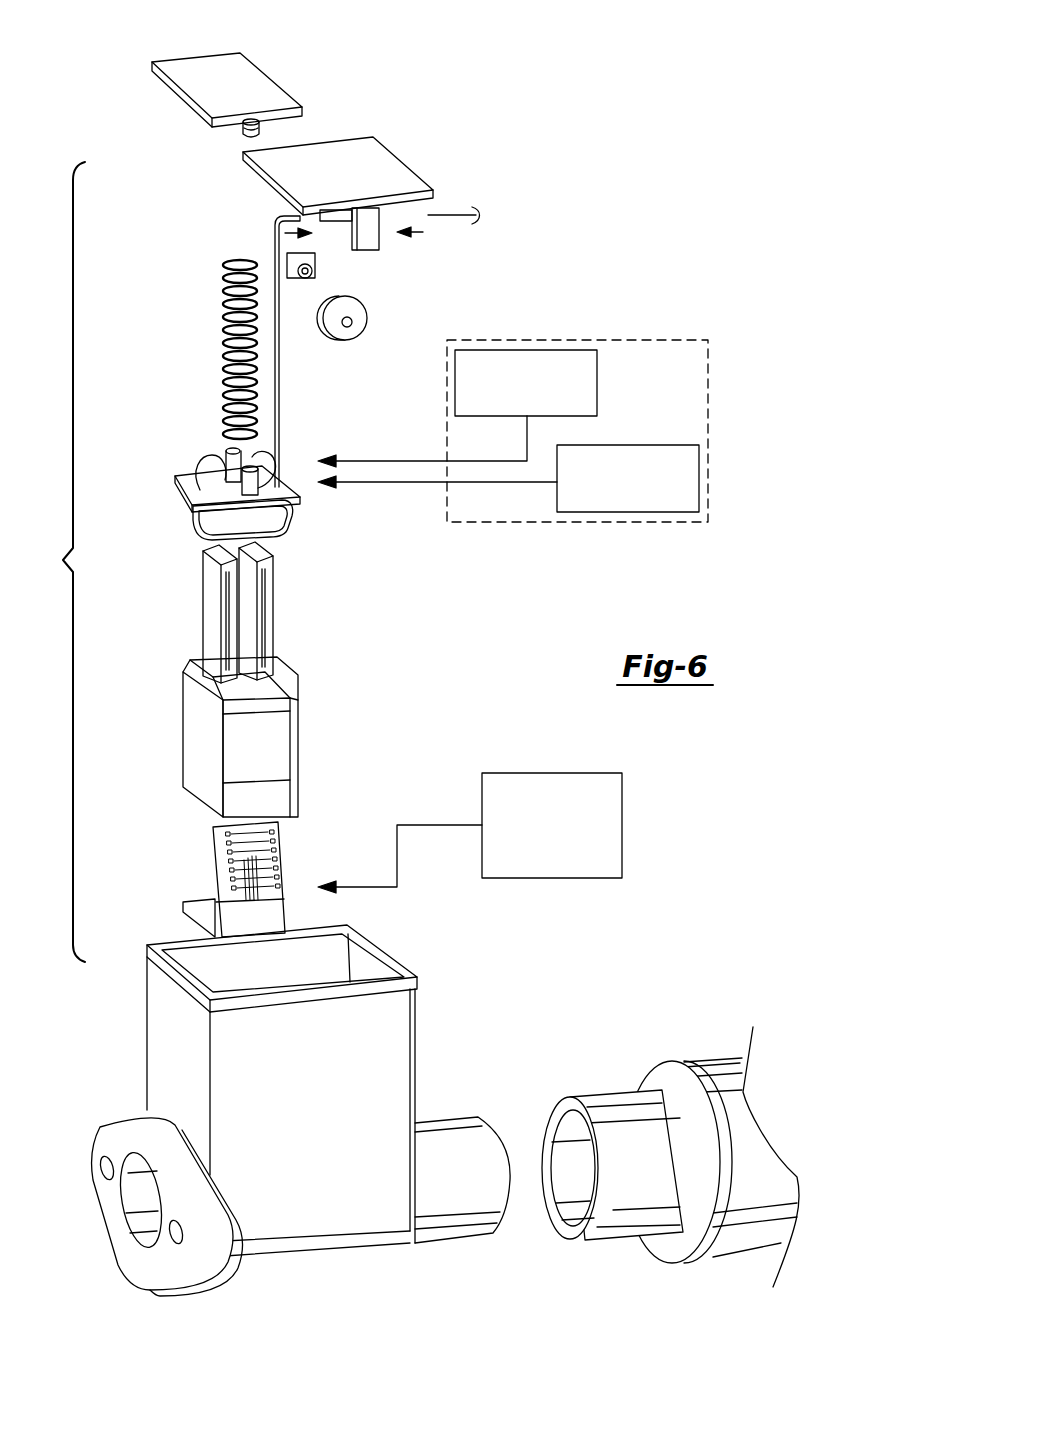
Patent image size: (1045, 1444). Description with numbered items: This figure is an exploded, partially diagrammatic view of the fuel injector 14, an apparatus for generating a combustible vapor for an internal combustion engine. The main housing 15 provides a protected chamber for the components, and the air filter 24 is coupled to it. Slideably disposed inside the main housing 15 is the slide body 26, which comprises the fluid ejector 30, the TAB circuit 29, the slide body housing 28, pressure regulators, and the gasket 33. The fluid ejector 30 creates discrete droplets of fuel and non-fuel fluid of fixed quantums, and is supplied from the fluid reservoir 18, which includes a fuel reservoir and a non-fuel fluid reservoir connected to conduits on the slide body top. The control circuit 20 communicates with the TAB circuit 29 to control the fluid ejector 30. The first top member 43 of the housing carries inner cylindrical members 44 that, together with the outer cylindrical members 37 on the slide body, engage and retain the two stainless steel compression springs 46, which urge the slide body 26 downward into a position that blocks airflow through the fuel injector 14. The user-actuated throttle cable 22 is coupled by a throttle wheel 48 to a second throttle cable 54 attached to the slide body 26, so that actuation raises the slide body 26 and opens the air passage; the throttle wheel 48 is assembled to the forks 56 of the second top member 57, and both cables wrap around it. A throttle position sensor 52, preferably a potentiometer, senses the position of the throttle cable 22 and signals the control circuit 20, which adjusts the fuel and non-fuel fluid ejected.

The fuel injector 14 is at (395, 666).
The main housing 15 is at (172, 1060).
The fluid reservoir 18 is at (708, 350).
The control circuit 20 is at (551, 773).
The throttle cable 22 is at (475, 208).
The air filter 24 is at (706, 1062).
The slide body 26 is at (59, 562).
The slide body housing 28 is at (207, 755).
The TAB circuit 29 is at (228, 850).
The fluid ejector 30 is at (183, 900).
The gasket 33 is at (297, 530).
The outer cylindrical members 37 is at (225, 460).
The first top member 43 is at (216, 70).
The inner cylindrical members 44 is at (262, 131).
The compression springs 46 is at (222, 288).
The throttle wheel 48 is at (355, 318).
The throttle position sensor 52 is at (306, 272).
The second throttle cable 54 is at (275, 247).
The forks 56 is at (367, 244).
The second top member 57 is at (376, 173).